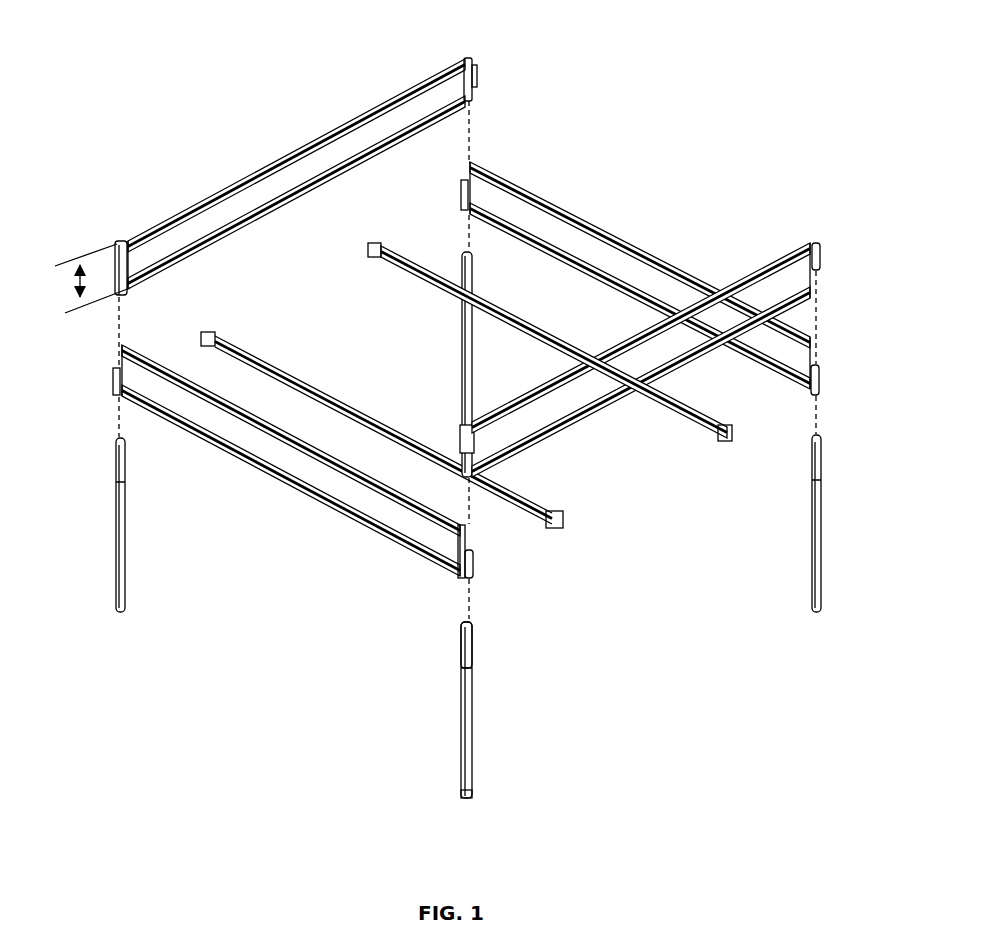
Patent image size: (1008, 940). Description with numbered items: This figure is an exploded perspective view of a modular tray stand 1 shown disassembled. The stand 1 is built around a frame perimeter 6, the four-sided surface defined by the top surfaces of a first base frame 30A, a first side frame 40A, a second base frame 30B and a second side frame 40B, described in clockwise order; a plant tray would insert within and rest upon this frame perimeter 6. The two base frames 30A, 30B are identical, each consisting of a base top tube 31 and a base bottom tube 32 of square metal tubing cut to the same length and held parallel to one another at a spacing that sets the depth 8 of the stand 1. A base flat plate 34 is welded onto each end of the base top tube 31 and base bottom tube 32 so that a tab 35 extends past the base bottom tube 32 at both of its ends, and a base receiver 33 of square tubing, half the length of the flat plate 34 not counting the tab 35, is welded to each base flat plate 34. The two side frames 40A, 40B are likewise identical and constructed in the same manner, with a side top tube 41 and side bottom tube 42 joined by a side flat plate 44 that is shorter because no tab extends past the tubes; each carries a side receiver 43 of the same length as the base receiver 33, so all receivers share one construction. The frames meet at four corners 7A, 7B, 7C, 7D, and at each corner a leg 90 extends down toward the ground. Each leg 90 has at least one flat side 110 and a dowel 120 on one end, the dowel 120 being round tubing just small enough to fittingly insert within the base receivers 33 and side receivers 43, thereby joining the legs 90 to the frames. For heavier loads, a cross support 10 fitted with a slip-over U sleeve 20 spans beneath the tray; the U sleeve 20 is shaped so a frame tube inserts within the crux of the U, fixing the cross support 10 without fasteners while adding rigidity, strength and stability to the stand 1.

The stand 1 is at (539, 29).
The frame perimeter 6 is at (150, 352).
The corner 7A is at (114, 236).
The corner 7B is at (459, 56).
The corner 7C is at (813, 238).
The corner 7D is at (461, 427).
The depth 8 is at (90, 278).
The cross support 10 is at (258, 351).
The U sleeve 20 is at (563, 533).
The first base frame 30A is at (331, 547).
The second base frame 30B is at (599, 198).
The base top tube 31 is at (210, 400).
The base bottom tube 32 is at (286, 482).
The base receiver 33 is at (457, 562).
The base flat plate 34 is at (472, 539).
The tab 35 is at (479, 224).
The first side frame 40A is at (224, 144).
The second side frame 40B is at (642, 422).
The side top tube 41 is at (677, 329).
The side bottom tube 42 is at (567, 433).
The side receiver 43 is at (479, 78).
The side flat plate 44 is at (459, 84).
The leg 90 is at (450, 718).
The flat side 110 is at (475, 792).
The dowel 120 is at (477, 644).